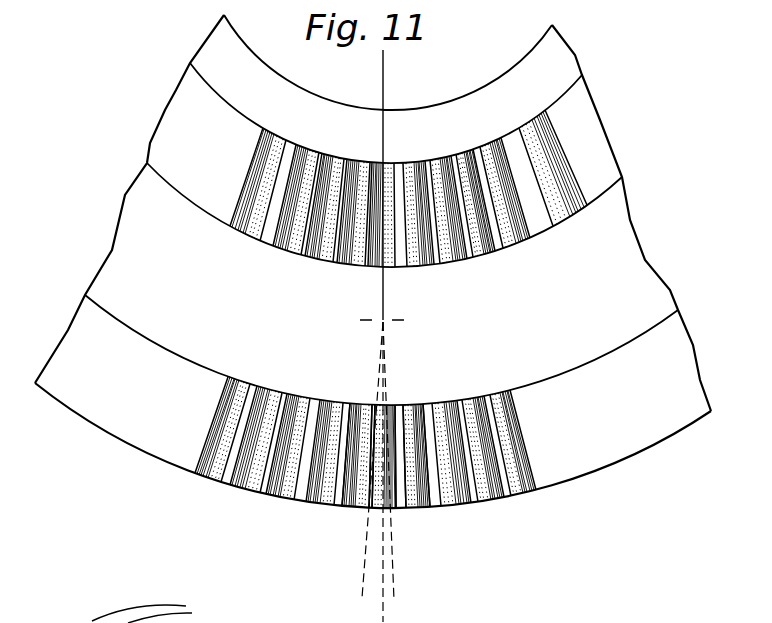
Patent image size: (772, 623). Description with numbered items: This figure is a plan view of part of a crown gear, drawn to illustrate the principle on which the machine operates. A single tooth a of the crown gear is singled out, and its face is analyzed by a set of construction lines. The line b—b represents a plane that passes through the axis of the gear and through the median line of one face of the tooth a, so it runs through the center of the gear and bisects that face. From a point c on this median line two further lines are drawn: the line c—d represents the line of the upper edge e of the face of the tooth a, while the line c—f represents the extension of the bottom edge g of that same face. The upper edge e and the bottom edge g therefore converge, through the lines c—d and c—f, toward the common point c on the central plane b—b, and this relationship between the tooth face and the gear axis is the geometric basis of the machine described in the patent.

The tooth a is at (393, 510).
The line b— b is at (368, 185).
The point c is at (391, 321).
The line c— d is at (395, 472).
The upper edge e is at (390, 456).
The line c— f is at (356, 468).
The bottom edge g is at (362, 480).